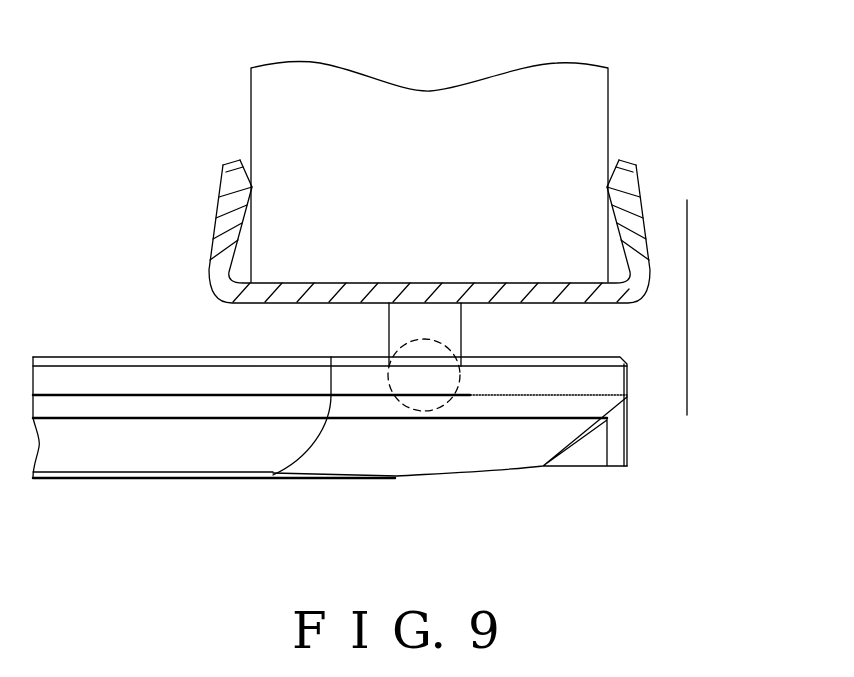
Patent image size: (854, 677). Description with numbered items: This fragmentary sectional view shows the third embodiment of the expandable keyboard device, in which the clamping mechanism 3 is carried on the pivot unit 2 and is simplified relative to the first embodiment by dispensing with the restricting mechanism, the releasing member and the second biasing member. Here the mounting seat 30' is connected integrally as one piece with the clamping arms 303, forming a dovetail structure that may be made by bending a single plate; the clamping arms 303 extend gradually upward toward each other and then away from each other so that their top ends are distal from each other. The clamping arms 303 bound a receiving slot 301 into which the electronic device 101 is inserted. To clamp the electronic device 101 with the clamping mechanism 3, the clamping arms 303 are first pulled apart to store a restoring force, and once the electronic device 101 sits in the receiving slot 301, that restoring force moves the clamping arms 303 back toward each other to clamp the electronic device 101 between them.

The electronic device 101 is at (560, 110).
The clamping mechanism 3 is at (413, 227).
The receiving slot 301 is at (613, 247).
The clamping arms 303 is at (222, 232).
The pivot unit 2 is at (472, 340).
The mounting seat 30' is at (659, 307).